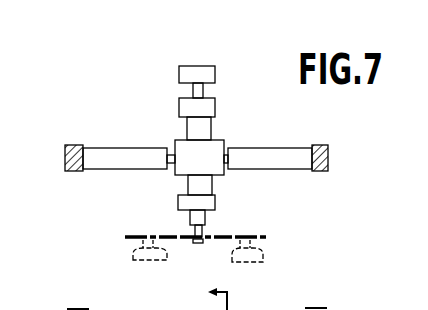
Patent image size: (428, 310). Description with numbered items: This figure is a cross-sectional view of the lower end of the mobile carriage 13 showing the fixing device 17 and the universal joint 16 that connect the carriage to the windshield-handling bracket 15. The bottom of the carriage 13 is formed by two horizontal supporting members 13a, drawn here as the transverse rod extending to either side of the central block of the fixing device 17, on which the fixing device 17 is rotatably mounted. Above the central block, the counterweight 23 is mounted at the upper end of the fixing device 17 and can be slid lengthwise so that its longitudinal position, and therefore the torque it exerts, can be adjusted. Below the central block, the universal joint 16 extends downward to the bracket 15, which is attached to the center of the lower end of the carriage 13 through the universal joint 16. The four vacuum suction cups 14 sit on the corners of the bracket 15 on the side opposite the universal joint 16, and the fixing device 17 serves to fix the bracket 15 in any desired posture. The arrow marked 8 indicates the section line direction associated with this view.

The section line arrow 8 is at (228, 299).
The mobile carriage 13 is at (328, 158).
The horizontal supporting members 13a is at (293, 149).
The vacuum suction cups 14 is at (265, 259).
The bracket 15 is at (267, 237).
The universal joint 16 is at (206, 233).
The fixing device 17 is at (216, 141).
The counterweight 23 is at (213, 66).